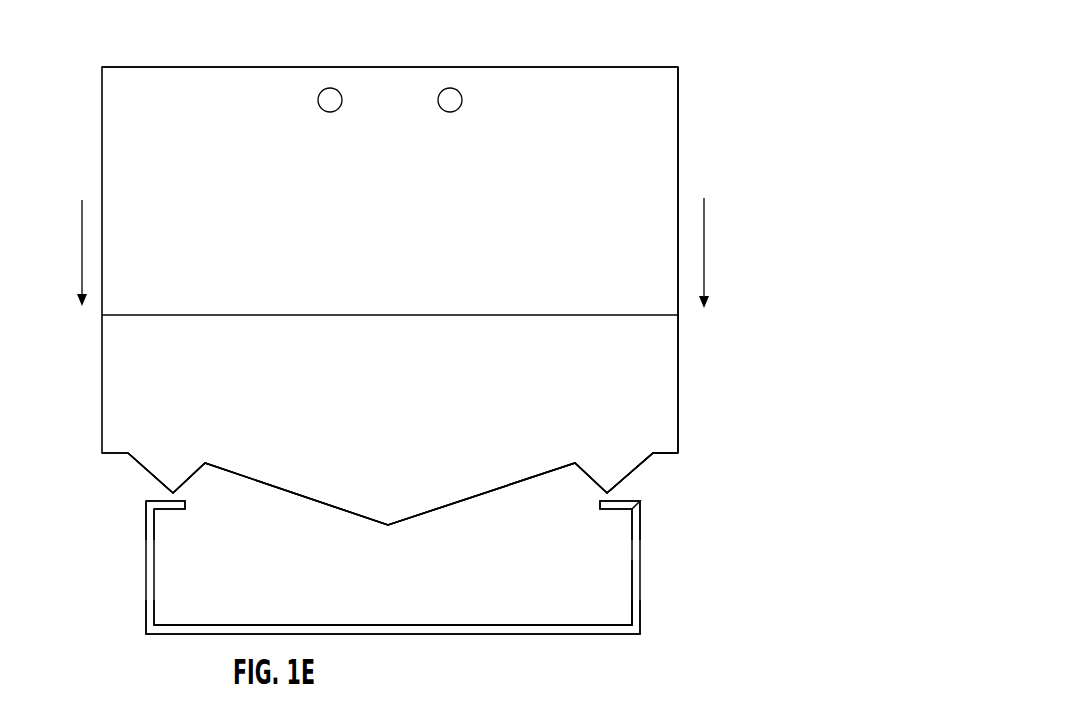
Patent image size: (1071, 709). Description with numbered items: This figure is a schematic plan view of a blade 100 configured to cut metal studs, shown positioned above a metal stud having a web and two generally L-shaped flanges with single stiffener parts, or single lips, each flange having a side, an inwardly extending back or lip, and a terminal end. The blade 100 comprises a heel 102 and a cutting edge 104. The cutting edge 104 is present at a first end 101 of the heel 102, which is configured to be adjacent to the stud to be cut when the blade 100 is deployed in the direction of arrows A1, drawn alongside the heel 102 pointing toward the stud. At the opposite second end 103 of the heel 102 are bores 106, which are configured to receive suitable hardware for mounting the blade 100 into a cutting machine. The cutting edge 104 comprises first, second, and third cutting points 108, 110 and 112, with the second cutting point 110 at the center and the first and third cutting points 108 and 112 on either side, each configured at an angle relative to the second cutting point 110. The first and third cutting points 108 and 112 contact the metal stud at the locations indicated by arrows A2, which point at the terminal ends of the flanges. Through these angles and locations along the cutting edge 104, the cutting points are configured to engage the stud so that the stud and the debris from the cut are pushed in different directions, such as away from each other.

The blade 100 is at (713, 122).
The first end 101 is at (737, 472).
The heel 102 is at (411, 188).
The second end 103 is at (92, 65).
The cutting edge 104 is at (643, 464).
The bores 106 is at (443, 89).
The first cutting point 108 is at (173, 489).
The second cutting point 110 is at (389, 521).
The third cutting point 112 is at (607, 489).
The arrows A1 is at (394, 253).
The arrows A2 is at (164, 498).